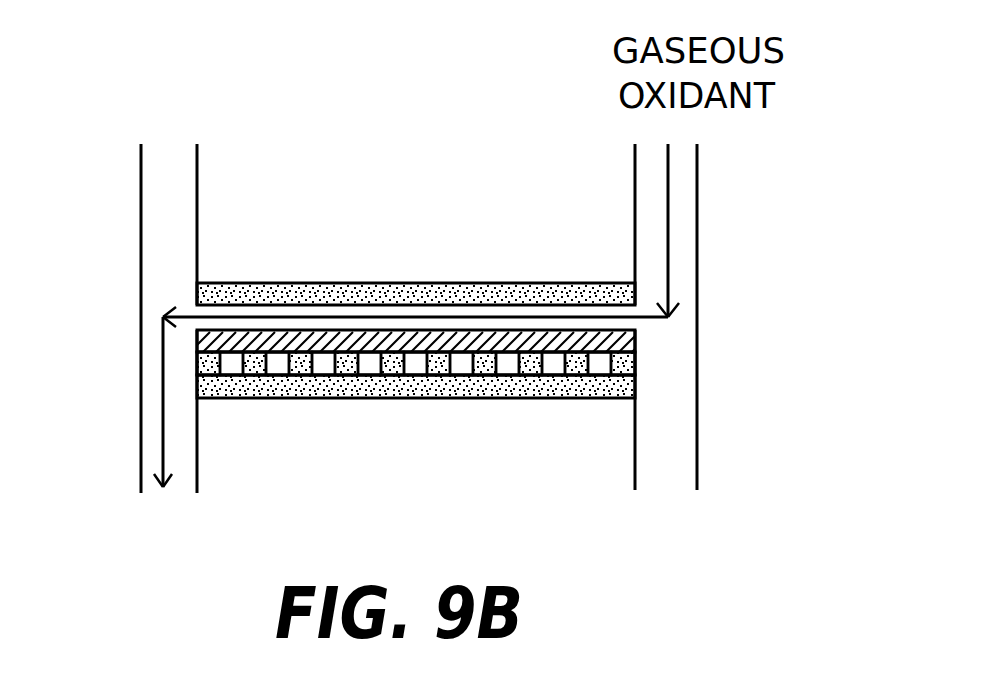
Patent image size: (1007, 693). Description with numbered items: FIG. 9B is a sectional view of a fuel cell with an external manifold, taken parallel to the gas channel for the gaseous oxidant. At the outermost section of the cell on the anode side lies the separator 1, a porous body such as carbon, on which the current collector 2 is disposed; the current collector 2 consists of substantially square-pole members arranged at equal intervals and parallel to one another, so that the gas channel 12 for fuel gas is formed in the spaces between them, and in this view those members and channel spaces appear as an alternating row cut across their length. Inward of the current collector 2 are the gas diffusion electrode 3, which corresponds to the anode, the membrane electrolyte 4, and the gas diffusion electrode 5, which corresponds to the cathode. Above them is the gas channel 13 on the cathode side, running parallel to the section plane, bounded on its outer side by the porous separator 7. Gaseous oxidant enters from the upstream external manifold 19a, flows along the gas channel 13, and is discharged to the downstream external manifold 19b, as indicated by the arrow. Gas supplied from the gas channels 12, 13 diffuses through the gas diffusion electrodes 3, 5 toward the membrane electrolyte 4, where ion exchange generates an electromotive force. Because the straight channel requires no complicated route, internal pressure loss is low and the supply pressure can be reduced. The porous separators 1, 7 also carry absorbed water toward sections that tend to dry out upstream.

The separator 1 is at (435, 387).
The current collector 2 is at (416, 423).
The gas channel 12 is at (325, 357).
The gas diffusion electrode 3 is at (416, 279).
The membrane electrolyte 4 is at (416, 279).
The gas diffusion electrode 5 is at (220, 333).
The separator 7 is at (481, 297).
The gas channel 13 is at (317, 320).
The upstream external manifold 19a is at (634, 200).
The downstream external manifold 19b is at (153, 395).